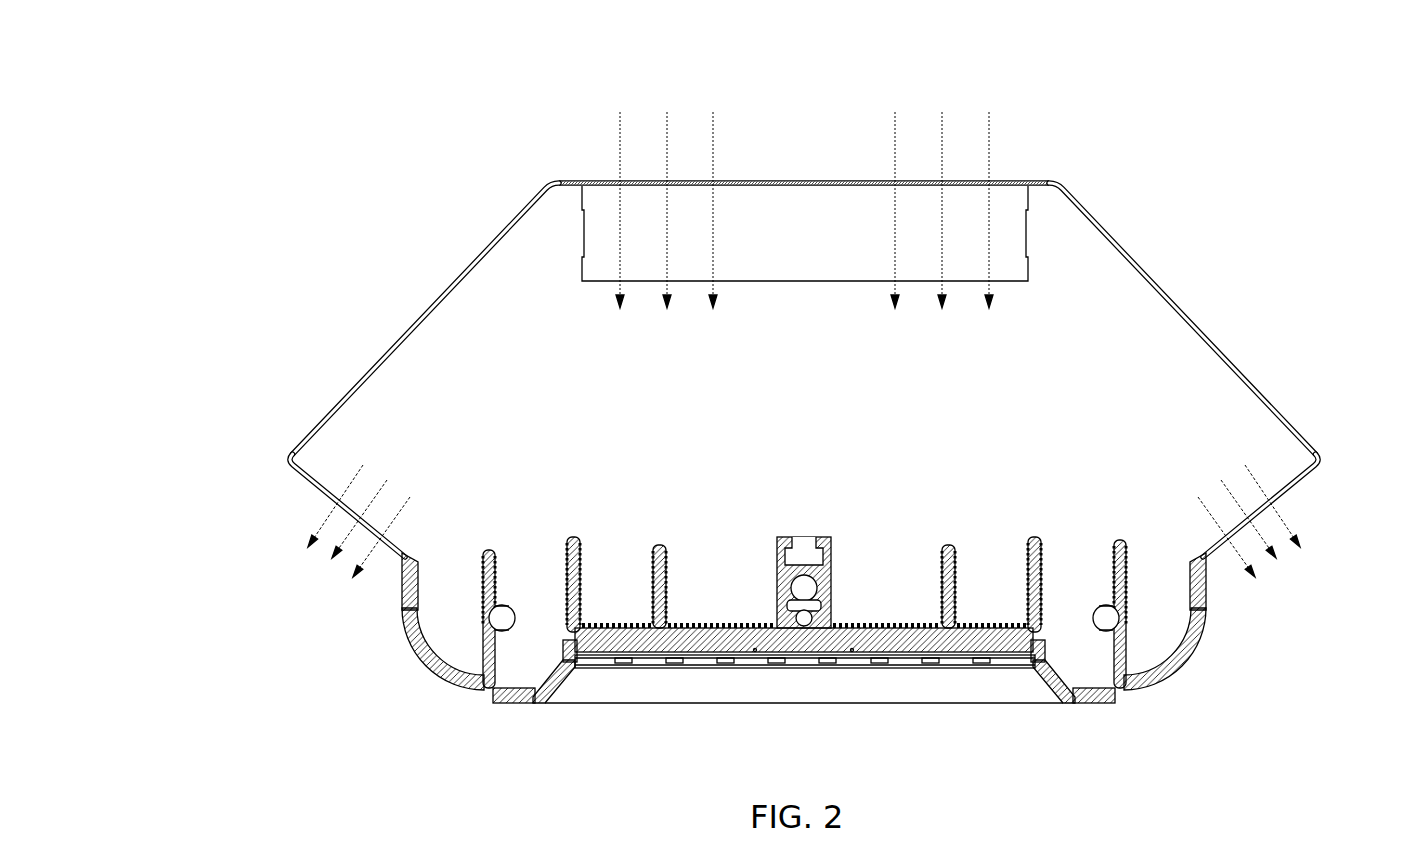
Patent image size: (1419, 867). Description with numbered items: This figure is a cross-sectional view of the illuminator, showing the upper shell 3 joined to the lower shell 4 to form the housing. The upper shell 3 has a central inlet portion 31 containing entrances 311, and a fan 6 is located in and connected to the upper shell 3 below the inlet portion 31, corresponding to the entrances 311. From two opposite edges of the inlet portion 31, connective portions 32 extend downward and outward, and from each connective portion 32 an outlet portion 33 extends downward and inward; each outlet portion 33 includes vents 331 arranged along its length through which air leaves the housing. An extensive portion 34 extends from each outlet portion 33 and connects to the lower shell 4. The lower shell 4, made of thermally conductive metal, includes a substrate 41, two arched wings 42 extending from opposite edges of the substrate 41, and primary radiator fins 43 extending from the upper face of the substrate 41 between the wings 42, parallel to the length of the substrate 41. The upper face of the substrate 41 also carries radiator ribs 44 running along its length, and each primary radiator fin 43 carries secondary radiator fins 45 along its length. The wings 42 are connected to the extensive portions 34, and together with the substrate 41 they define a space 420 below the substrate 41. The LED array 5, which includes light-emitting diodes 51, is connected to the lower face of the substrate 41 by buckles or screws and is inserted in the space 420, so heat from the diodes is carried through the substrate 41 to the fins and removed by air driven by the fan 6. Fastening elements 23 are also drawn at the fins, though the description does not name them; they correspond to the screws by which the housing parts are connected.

The upper shell 3 is at (754, 376).
The inlet portion 31 is at (588, 180).
The entrances 311 is at (657, 182).
The connective portions 32 is at (420, 318).
The outlet portions 33 is at (285, 478).
The vents 331 is at (320, 500).
The extensive portions 34 is at (716, 588).
The lower shell 4 is at (775, 650).
The substrate 41 is at (905, 645).
The wings 42 is at (423, 663).
The primary radiator fins 43 is at (483, 587).
The radiator ribs 44 is at (618, 620).
The secondary radiator fins 45 is at (567, 558).
The space 420 is at (634, 688).
The LED array 5 is at (748, 660).
The light-emitting diodes 51 is at (722, 665).
The fans 6 is at (1028, 232).
The screws 23 is at (505, 620).